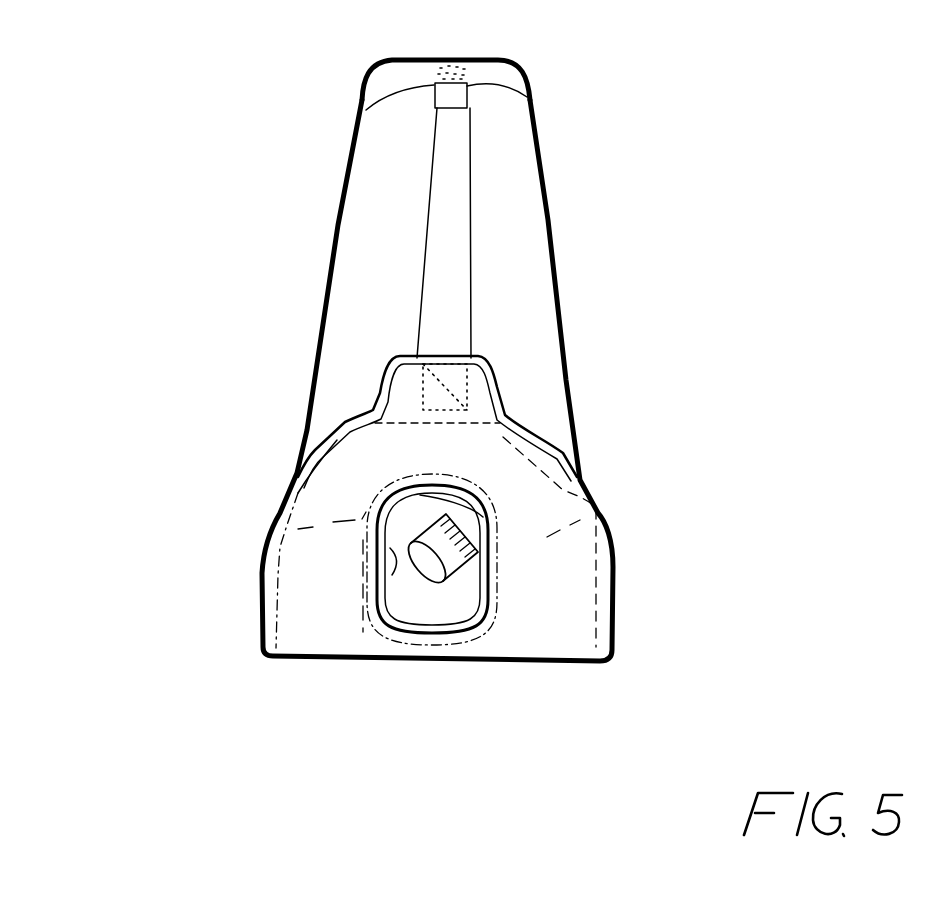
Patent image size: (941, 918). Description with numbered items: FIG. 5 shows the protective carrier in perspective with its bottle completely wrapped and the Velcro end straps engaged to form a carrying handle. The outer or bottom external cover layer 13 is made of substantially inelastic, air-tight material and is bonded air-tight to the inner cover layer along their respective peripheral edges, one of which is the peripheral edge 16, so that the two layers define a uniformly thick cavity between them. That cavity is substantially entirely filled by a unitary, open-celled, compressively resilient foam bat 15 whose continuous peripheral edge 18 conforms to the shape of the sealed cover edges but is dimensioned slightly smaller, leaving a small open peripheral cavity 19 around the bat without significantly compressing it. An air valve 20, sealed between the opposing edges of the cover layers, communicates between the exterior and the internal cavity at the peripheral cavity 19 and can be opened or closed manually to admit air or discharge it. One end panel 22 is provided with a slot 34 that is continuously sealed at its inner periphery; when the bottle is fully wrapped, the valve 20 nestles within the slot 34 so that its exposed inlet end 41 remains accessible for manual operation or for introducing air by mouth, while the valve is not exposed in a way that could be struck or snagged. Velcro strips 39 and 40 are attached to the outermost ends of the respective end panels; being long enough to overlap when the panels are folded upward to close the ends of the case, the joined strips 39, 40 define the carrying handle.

The second external cover layer 13 is at (375, 297).
The foam bat 15 is at (620, 508).
The peripheral edge 16 is at (517, 432).
The peripheral edge of the foam bat 18 is at (242, 537).
The peripheral cavity 19 is at (385, 580).
The air valve 20 is at (400, 623).
The end panel 22 is at (540, 607).
The slot 34 is at (398, 575).
The Velcro strip 39 is at (453, 273).
The Velcro strip 40 is at (458, 97).
The inlet end 41 is at (425, 562).